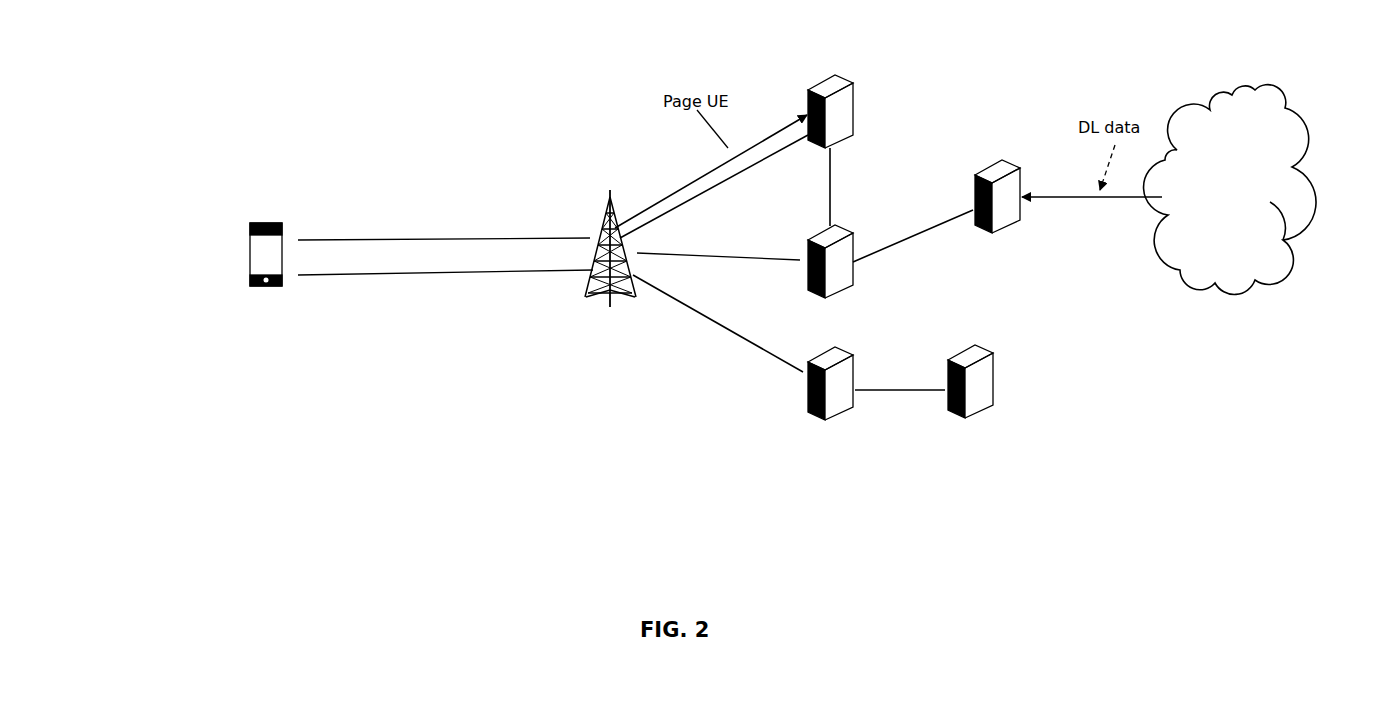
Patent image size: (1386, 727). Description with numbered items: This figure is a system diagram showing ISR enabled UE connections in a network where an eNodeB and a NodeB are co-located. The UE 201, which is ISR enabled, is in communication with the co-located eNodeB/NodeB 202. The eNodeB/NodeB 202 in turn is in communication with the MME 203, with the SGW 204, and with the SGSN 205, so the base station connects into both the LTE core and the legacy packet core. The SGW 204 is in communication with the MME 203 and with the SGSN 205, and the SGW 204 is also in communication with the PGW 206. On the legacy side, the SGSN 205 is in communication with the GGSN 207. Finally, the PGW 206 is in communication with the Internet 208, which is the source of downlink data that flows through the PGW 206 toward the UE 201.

The UE 201 is at (275, 208).
The eNodeB/NodeB 202 is at (625, 205).
The MME 203 is at (858, 75).
The SGW 204 is at (853, 250).
The SGSN 205 is at (855, 372).
The PGW 206 is at (1015, 160).
The GGSN 207 is at (995, 368).
The Internet 208 is at (1298, 97).